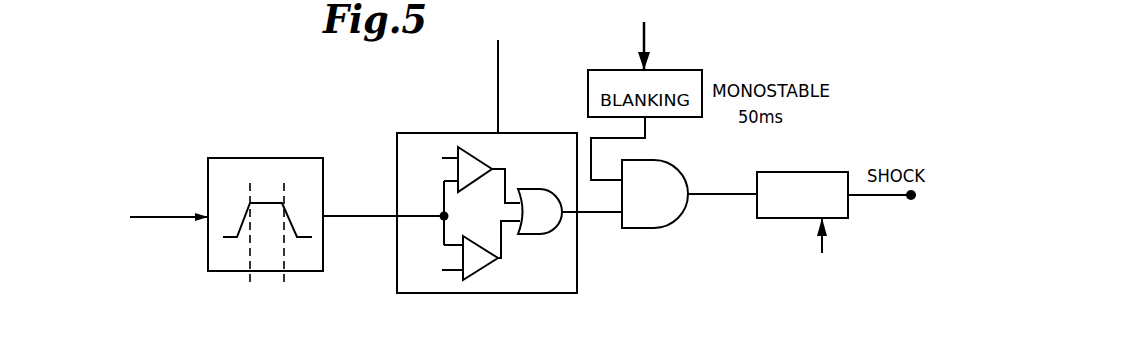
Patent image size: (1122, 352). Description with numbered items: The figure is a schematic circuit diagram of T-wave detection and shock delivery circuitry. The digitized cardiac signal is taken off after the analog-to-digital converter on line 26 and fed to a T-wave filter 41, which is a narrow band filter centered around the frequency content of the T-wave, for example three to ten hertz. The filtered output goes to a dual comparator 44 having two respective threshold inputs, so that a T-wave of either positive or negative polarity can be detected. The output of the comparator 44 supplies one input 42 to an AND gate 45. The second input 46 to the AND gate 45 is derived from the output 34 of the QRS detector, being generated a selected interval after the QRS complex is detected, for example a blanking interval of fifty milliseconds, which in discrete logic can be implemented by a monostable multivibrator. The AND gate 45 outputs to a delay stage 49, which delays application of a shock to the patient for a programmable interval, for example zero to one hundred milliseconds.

The line 26 is at (143, 217).
The T-wave filter 41 is at (323, 167).
The dual comparator 44 is at (422, 133).
The input to AND gate 42 is at (592, 213).
The output of QRS detector 34 is at (644, 38).
The second input to AND gate 46 is at (606, 138).
The AND gate 45 is at (663, 228).
The delay stage 49 is at (798, 218).